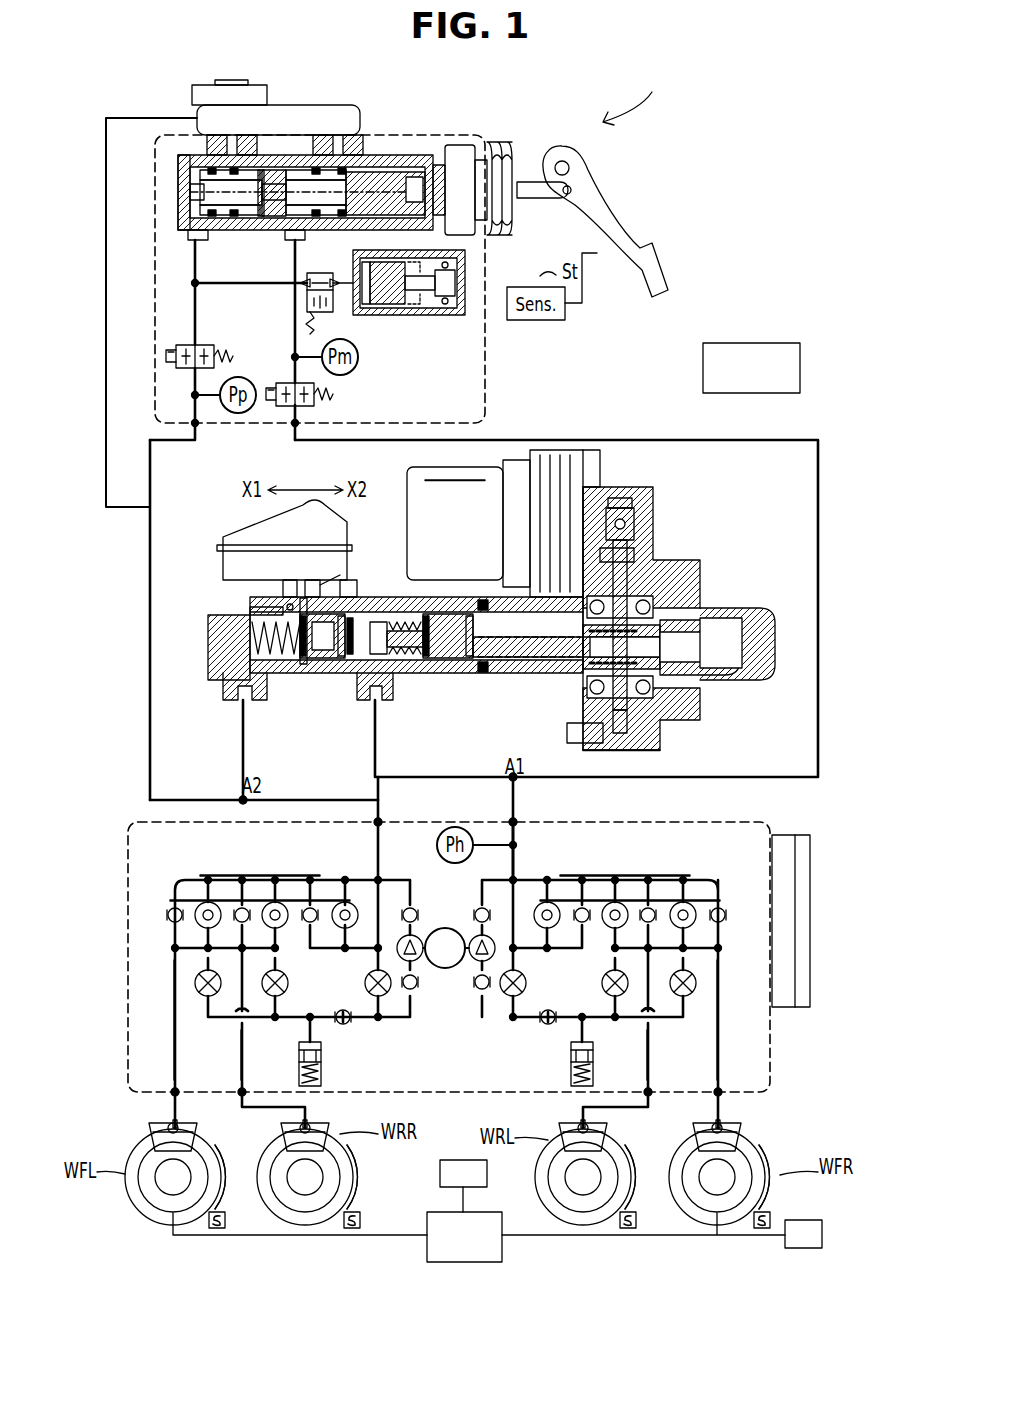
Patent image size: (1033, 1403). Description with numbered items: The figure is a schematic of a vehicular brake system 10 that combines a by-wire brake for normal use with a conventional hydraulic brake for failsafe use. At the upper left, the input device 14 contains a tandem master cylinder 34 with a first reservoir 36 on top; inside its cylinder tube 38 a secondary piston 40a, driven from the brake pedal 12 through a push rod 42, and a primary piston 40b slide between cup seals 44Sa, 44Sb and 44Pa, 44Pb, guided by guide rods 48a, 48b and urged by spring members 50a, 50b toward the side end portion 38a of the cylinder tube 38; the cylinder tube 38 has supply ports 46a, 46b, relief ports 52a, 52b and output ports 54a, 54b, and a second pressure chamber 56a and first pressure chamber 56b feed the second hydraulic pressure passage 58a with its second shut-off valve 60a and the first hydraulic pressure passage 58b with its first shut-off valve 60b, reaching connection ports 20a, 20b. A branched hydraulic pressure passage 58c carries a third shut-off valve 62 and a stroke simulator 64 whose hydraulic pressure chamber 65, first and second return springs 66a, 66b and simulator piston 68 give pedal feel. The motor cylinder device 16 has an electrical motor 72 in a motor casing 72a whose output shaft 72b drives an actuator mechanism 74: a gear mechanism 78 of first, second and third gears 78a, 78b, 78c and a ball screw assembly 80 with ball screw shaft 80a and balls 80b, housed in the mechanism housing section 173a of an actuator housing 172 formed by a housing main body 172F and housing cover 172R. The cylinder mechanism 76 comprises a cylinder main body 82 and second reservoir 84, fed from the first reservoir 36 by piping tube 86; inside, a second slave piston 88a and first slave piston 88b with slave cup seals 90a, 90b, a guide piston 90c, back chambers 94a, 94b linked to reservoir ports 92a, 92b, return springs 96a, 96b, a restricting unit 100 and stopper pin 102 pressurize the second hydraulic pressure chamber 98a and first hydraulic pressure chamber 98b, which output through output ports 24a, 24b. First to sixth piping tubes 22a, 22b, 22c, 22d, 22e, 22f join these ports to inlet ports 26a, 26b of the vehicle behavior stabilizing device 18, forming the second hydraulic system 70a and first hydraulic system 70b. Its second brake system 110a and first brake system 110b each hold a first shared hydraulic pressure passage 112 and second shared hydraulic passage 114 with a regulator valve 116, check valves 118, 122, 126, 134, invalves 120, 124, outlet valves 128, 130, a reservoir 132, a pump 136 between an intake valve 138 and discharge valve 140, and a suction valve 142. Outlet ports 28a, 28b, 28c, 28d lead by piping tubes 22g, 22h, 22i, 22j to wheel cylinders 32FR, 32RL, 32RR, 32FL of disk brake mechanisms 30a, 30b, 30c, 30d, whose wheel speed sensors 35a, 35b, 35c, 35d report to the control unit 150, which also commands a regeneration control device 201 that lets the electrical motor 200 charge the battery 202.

The vehicular brake system 10 is at (627, 94).
The brake pedal 12 is at (668, 263).
The input device 14 is at (487, 345).
The motor cylinder device 16 is at (705, 440).
The vehicle behavior stabilizing device 18 is at (702, 822).
The connection port 20a is at (293, 430).
The connection port 20b is at (198, 432).
The first piping tube 22a is at (820, 522).
The second piping tube 22b is at (421, 777).
The third piping tube 22c is at (516, 793).
The fourth piping tube 22d is at (148, 598).
The fifth piping tube 22e is at (241, 750).
The sixth piping tube 22f is at (320, 798).
The seventh piping tube 22g is at (722, 1122).
The eighth piping tube 22h is at (582, 1118).
The ninth piping tube 22i is at (308, 1118).
The tenth piping tube 22j is at (172, 1122).
The output port 24a is at (378, 700).
The output port 24b is at (222, 688).
The inlet port 26a is at (516, 820).
The inlet port 26b is at (381, 812).
The first outlet port 28a is at (722, 1100).
The second outlet port 28b is at (652, 1095).
The third outlet port 28c is at (240, 1097).
The fourth outlet port 28d is at (172, 1096).
The disk brake mechanism 30a is at (769, 1176).
The disk brake mechanism 30b is at (631, 1172).
The disk brake mechanism 30c is at (359, 1176).
The disk brake mechanism 30d is at (219, 1172).
The wheel cylinder 32FL is at (192, 1128).
The wheel cylinder 32FR is at (735, 1138).
The wheel cylinder 32RL is at (600, 1128).
The wheel cylinder 32RR is at (325, 1138).
The master cylinder 34 is at (405, 152).
The wheel speed sensor 35a is at (772, 1214).
The wheel speed sensor 35b is at (640, 1220).
The wheel speed sensor 35c is at (361, 1220).
The wheel speed sensor 35d is at (226, 1220).
The first reservoir 36 is at (355, 112).
The cylinder tube 38 is at (438, 168).
The side end portion 38a is at (185, 172).
The secondary piston 40a is at (405, 214).
The primary piston 40b is at (272, 214).
The push rod 42 is at (462, 148).
The cup seal 44Pa is at (213, 214).
The cup seal 44Pb is at (236, 216).
The cup seal 44Sa is at (318, 214).
The cup seal 44Sb is at (345, 214).
The second supply port 46a is at (344, 168).
The first supply port 46b is at (234, 166).
The guide rod 48a is at (300, 172).
The guide rod 48b is at (197, 192).
The spring member 50a is at (275, 182).
The spring member 50b is at (182, 222).
The second relief port 52a is at (318, 166).
The first relief port 52b is at (212, 165).
The output port 54a is at (294, 282).
The output port 54b is at (198, 240).
The second pressure chamber 56a is at (261, 168).
The first pressure chamber 56b is at (200, 160).
The second hydraulic pressure passage 58a is at (292, 350).
The first hydraulic pressure passage 58b is at (192, 283).
The branched hydraulic pressure passage 58c is at (199, 303).
The second shut-off valve 60a is at (325, 404).
The first shut-off valve 60b is at (210, 345).
The third shut-off valve 62 is at (326, 312).
The stroke simulator 64 is at (478, 268).
The hydraulic pressure chamber 65 is at (373, 312).
The first return spring 66a is at (446, 304).
The second return spring 66b is at (414, 312).
The simulator piston 68 is at (390, 308).
The second hydraulic system 70a is at (588, 436).
The first hydraulic system 70b is at (127, 651).
The electrical motor 72 is at (460, 467).
The motor casing 72a is at (470, 495).
The output shaft 72b is at (634, 526).
The actuator mechanism 74 is at (732, 565).
The cylinder mechanism 76 is at (199, 664).
The gear mechanism 78 is at (735, 590).
The first gear 78a is at (618, 500).
The second gear 78b is at (636, 552).
The third gear 78c is at (632, 718).
The ball screw assembly 80 is at (706, 637).
The ball screw shaft 80a is at (705, 675).
The balls 80b is at (655, 628).
The cylinder main body 82 is at (410, 652).
The second reservoir 84 is at (222, 546).
The piping tube 86 is at (104, 350).
The second slave piston 88a is at (470, 660).
The first slave piston 88b is at (332, 660).
The slave cup seal 90a is at (352, 660).
The slave cup seal 90b is at (455, 660).
The guide piston 90c is at (490, 672).
The reservoir port 92a is at (325, 585).
The reservoir port 92b is at (283, 590).
The second back chamber 94a is at (472, 660).
The first back chamber 94b is at (340, 660).
The second return spring 96a is at (432, 604).
The first return spring 96b is at (245, 607).
The second hydraulic pressure chamber 98a is at (452, 742).
The first hydraulic pressure chamber 98b is at (196, 632).
The restricting unit 100 is at (380, 658).
The stopper pin 102 is at (304, 665).
The second brake system 110a is at (709, 861).
The first brake system 110b is at (181, 861).
The first shared hydraulic pressure passage 112 is at (645, 878).
The second shared hydraulic passage 114 is at (634, 1022).
The regulator valve 116 is at (544, 900).
The first check valve 118 is at (582, 905).
The first invalve 120 is at (686, 900).
The second check valve 122 is at (724, 906).
The second invalve 124 is at (614, 900).
The third check valve 126 is at (650, 905).
The first outlet valve 128 is at (688, 997).
The second outlet valve 130 is at (602, 979).
The reservoir 132 is at (571, 1076).
The fourth check valve 134 is at (550, 1024).
The pump 136 is at (468, 960).
The intake valve 138 is at (448, 968).
The discharge valve 140 is at (478, 906).
The suction valve 142 is at (486, 992).
The control unit 150 is at (755, 343).
The actuator housing 172 is at (626, 740).
The housing main body 172F is at (603, 752).
The housing cover 172R is at (768, 680).
The mechanism housing section 173a is at (583, 730).
The electrical motor 200 is at (823, 1236).
The regeneration control device 201 is at (503, 1222).
The battery 202 is at (488, 1173).